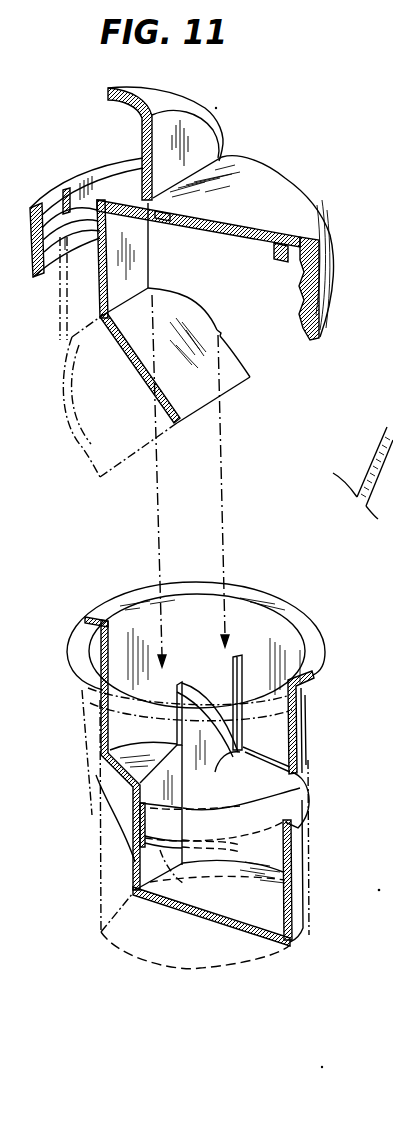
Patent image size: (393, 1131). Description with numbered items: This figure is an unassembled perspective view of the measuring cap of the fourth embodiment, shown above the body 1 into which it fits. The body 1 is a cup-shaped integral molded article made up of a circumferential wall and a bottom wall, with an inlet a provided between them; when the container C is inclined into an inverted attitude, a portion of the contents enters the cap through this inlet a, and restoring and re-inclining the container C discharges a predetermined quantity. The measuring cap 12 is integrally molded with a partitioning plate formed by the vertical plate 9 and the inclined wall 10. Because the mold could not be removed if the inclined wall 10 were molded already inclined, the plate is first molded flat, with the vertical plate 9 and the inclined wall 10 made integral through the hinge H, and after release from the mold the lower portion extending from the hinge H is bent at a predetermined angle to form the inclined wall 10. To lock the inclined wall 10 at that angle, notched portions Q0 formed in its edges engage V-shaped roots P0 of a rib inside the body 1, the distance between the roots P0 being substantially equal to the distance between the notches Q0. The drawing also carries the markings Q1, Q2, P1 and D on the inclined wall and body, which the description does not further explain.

The body 1 is at (313, 855).
The vertical plate 9 is at (137, 267).
The inclined wall 10 is at (232, 388).
The measuring cap 12 is at (278, 201).
The hinge H is at (100, 318).
The notched portions Q0 is at (218, 338).
The upper edge curve Q1 is at (192, 300).
The lower edge curve Q2 is at (247, 368).
The container C is at (377, 447).
The V-shaped roots of a rib P0 is at (205, 822).
The curved vane P1 is at (197, 700).
The inlet a is at (287, 797).
The bottom plate D is at (243, 908).